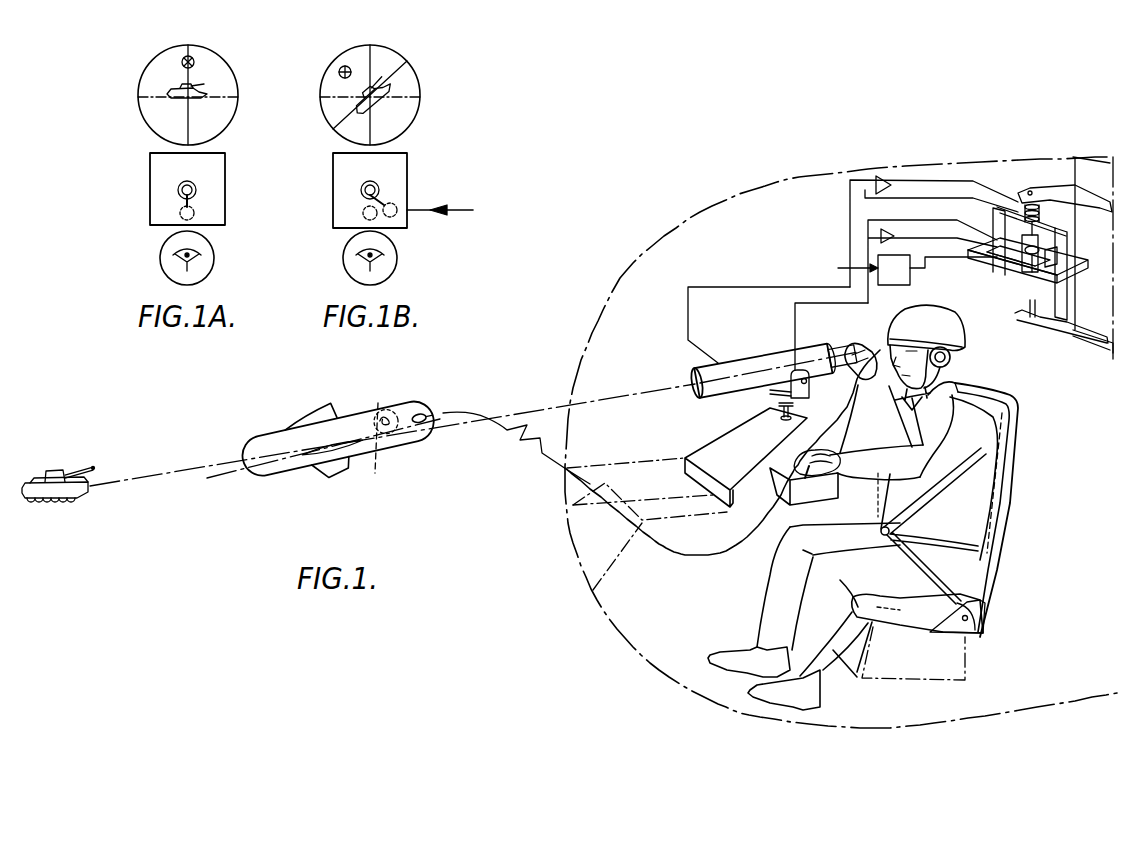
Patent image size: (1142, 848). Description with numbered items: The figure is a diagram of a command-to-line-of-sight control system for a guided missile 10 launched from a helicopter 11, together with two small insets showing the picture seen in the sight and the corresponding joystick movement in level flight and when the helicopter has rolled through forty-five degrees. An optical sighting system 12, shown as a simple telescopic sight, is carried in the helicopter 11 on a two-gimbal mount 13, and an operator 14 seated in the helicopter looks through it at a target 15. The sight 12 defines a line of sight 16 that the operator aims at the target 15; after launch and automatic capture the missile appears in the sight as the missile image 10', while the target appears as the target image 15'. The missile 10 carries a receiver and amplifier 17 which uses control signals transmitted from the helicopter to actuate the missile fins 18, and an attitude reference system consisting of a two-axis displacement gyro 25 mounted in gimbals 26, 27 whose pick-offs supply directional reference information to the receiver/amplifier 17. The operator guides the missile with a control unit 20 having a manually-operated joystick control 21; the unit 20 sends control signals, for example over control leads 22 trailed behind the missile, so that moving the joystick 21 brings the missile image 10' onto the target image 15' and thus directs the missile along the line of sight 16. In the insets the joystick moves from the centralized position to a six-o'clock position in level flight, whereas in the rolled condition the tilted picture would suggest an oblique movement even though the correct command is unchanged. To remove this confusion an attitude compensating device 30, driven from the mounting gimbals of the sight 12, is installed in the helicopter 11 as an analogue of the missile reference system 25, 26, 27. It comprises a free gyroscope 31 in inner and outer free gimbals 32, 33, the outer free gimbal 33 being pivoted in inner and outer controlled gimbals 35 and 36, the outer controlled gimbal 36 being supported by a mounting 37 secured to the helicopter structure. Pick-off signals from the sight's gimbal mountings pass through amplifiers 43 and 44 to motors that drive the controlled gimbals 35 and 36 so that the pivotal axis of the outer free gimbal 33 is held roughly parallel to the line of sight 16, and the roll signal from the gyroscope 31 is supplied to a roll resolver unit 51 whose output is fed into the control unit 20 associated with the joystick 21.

In FIG. 1, the guided missile 10 is at (358, 440).
In FIG. 1A, the missile image 10' is at (147, 62).
In FIG. 1B, the missile image 10' is at (319, 64).
In FIG. 1, the helicopter 11 is at (673, 227).
In FIG. 1, the optical sighting system 12 is at (690, 370).
In FIG. 1, the two-gimbal mount 13 is at (746, 457).
In FIG. 1A, the operator 14 is at (160, 258).
In FIG. 1B, the operator 14 is at (343, 258).
In FIG. 1, the operator 14 is at (972, 497).
In FIG. 1, the target 15 is at (58, 503).
In FIG. 1A, the target image 15' is at (149, 93).
In FIG. 1B, the target image 15' is at (335, 95).
In FIG. 1, the line of sight 16 is at (527, 410).
In FIG. 1, the receiver and amplifier 17 is at (427, 432).
In FIG. 1, the missile fins 18 is at (325, 473).
In FIG. 1A, the control unit 20 is at (150, 213).
In FIG. 1B, the control unit 20 is at (333, 213).
In FIG. 1, the control unit 20 is at (836, 498).
In FIG. 1A, the joystick control 21 is at (178, 190).
In FIG. 1B, the joystick control 21 is at (361, 191).
In FIG. 1, the joystick control 21 is at (809, 455).
In FIG. 1, the control leads 22 is at (547, 463).
In FIG. 1, the two-axis displacement gyro 25 is at (387, 414).
In FIG. 1, the gimbal 26 is at (347, 393).
In FIG. 1, the gimbal 27 is at (395, 437).
In FIG. 1, the attitude compensating device 30 is at (1023, 237).
In FIG. 1, the free gyroscope 31 is at (1030, 258).
In FIG. 1, the inner free gimbal 32 is at (1052, 252).
In FIG. 1, the outer free gimbal 33 is at (1049, 267).
In FIG. 1, the inner controlled gimbal 35 is at (978, 263).
In FIG. 1, the outer controlled gimbal 36 is at (1003, 282).
In FIG. 1, the mounting 37 is at (1047, 185).
In FIG. 1, the amplifier 43 is at (881, 237).
In FIG. 1, the amplifier 44 is at (883, 180).
In FIG. 1, the roll resolver unit 51 is at (838, 268).